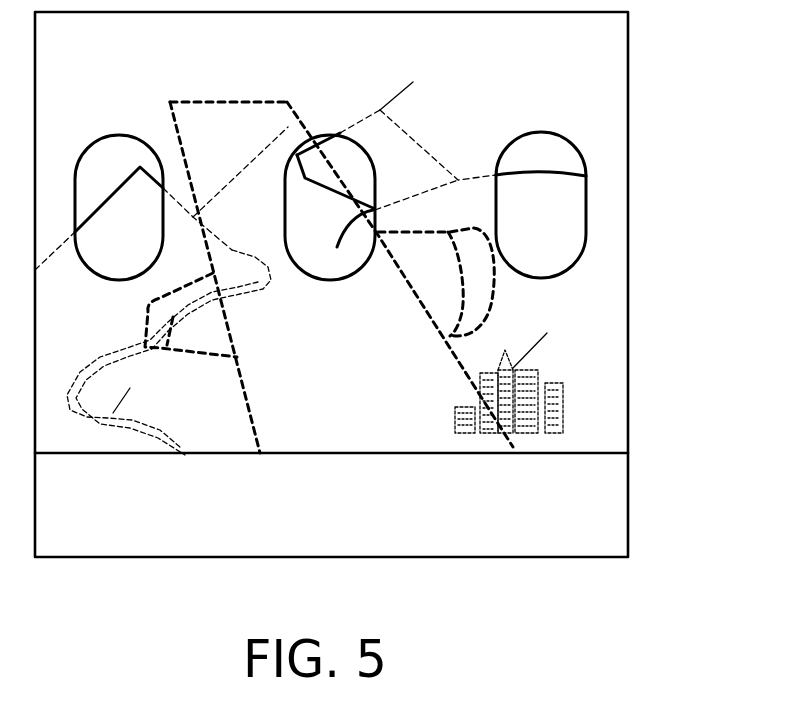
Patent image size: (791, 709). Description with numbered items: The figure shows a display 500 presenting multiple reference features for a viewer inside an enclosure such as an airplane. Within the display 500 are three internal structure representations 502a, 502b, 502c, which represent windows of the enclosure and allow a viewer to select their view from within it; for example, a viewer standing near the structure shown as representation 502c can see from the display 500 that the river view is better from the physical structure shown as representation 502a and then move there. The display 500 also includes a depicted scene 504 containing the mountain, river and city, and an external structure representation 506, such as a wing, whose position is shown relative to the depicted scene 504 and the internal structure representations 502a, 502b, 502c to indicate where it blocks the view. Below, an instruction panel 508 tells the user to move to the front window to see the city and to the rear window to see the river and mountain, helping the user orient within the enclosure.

The display 500 is at (628, 135).
The internal structure representation 502a is at (137, 135).
The internal structure representation 502b is at (363, 143).
The internal structure representation 502c is at (522, 133).
The depicted scene 504 is at (470, 63).
The external structure representation 506 is at (420, 228).
The instruction panel 508 is at (630, 510).